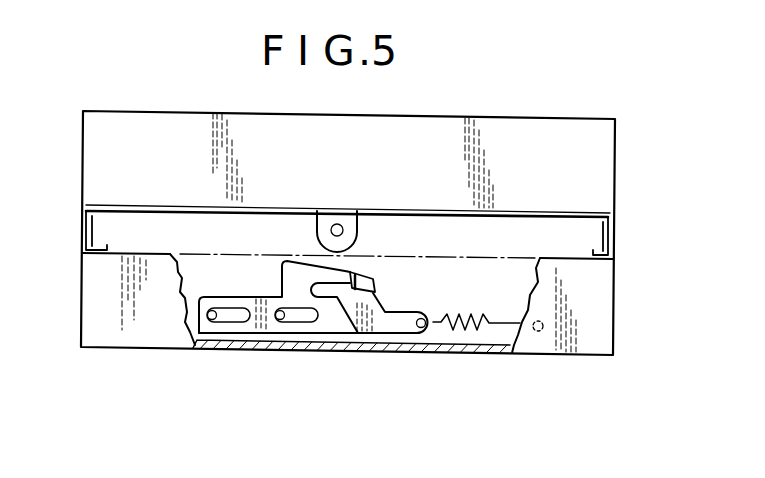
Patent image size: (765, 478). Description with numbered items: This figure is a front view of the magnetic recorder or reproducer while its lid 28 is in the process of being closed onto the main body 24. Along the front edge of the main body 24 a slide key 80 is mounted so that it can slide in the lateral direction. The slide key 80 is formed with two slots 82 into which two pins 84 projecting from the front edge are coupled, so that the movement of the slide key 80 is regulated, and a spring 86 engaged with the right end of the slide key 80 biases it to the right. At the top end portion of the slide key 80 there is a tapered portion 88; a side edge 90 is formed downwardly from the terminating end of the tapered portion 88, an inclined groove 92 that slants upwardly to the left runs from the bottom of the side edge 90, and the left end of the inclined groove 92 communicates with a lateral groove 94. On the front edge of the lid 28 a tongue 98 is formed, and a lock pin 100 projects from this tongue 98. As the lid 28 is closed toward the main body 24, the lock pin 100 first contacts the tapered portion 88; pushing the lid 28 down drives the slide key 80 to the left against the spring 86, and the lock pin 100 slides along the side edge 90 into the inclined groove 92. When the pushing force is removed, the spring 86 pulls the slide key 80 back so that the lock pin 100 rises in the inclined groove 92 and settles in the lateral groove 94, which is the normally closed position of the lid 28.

The main body 24 is at (612, 323).
The lid 28 is at (525, 117).
The slide key 80 is at (358, 337).
The slots 82 is at (235, 323).
The pins 84 is at (208, 322).
The spring 86 is at (478, 332).
The tapered portion 88 is at (352, 270).
The side edge 90 is at (376, 289).
The inclined groove 92 is at (362, 298).
The lateral groove 94 is at (327, 288).
The tongue 98 is at (322, 227).
The lock pin 100 is at (344, 229).